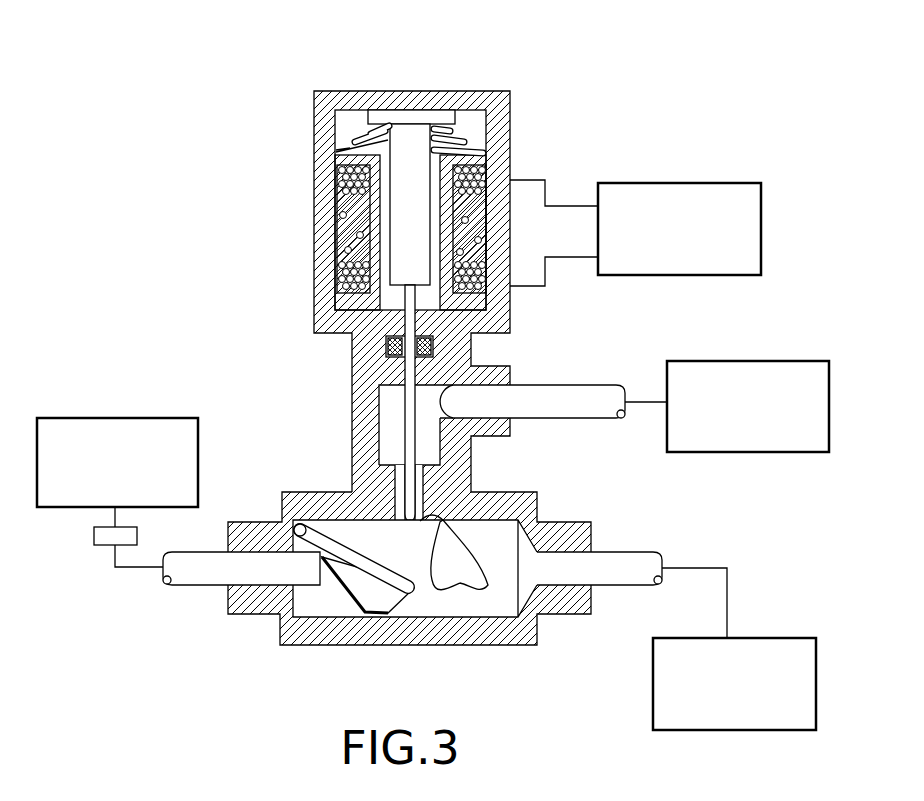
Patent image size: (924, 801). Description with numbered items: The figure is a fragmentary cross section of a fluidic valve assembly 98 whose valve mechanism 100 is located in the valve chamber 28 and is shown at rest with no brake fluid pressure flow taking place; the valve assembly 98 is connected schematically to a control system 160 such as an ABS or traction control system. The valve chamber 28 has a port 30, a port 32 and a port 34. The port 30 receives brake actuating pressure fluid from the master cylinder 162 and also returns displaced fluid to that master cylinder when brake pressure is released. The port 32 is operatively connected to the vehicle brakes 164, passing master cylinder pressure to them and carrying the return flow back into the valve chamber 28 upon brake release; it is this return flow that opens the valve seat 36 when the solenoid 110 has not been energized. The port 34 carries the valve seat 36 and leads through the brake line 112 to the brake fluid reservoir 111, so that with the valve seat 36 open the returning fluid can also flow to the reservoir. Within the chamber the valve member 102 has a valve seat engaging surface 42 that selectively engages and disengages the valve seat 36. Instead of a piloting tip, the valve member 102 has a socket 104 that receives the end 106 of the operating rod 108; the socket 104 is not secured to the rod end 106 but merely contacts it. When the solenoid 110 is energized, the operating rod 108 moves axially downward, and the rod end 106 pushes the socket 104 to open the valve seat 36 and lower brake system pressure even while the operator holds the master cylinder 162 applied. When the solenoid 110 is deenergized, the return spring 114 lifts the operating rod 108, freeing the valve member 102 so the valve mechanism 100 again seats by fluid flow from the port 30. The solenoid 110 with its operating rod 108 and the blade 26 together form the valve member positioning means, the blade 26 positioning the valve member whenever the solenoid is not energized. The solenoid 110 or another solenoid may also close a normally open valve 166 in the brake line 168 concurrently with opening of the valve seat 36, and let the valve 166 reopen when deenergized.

The valve assembly 98 is at (262, 140).
The solenoid 110 is at (298, 210).
The return spring 114 is at (357, 140).
The operating rod 108 is at (407, 405).
The brake line 112 is at (573, 388).
The brake fluid reservoir 111 is at (738, 360).
The port 34 is at (420, 490).
The valve seat 36 is at (440, 520).
The operating rod end 106 is at (405, 517).
The socket 104 is at (382, 552).
The valve member 102 is at (296, 526).
The valve mechanism 100 is at (418, 600).
The valve seat engaging surface 42 is at (445, 522).
The blade 26 is at (387, 610).
The valve chamber 28 is at (322, 610).
The port 30 is at (248, 560).
The port 32 is at (552, 580).
The control system 160 is at (678, 171).
The master cylinder 162 is at (155, 418).
The vehicle brakes 164 is at (692, 730).
The normally open valve 166 is at (98, 545).
The brake line 168 is at (197, 578).